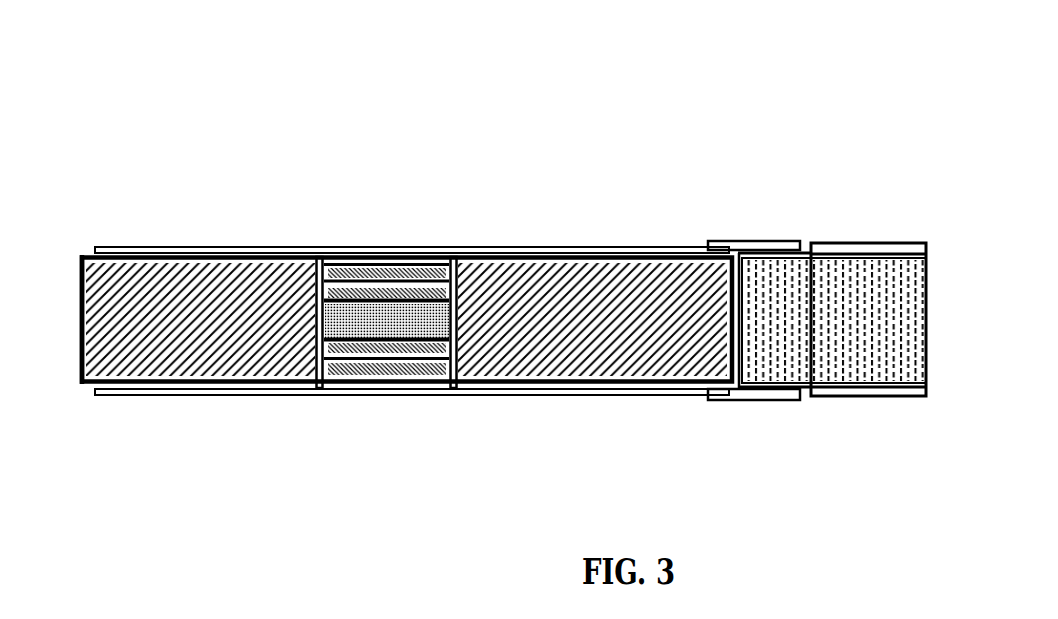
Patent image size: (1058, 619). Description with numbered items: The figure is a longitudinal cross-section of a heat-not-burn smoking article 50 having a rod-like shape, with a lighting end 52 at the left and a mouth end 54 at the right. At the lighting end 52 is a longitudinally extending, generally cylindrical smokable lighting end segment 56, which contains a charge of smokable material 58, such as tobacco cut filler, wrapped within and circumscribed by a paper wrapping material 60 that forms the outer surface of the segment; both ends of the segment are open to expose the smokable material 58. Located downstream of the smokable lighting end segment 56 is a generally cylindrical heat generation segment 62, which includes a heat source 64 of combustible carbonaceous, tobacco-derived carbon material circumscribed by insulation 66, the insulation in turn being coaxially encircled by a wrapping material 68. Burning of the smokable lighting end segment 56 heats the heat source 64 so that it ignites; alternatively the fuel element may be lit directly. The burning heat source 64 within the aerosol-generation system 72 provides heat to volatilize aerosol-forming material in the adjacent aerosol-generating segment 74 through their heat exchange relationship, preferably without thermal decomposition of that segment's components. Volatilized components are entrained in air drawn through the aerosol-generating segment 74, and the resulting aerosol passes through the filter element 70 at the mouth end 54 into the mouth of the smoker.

The heat-not-burn smoking article 50 is at (501, 309).
The lighting end 52 is at (81, 403).
The mouth end 54 is at (925, 205).
The smokable lighting end segment 56 is at (222, 403).
The smokable material 58 is at (267, 355).
The paper wrapping material 60 is at (273, 265).
The heat generation segment 62 is at (401, 324).
The heat source 64 is at (380, 320).
The insulation 66 is at (437, 262).
The wrapping material 68 is at (346, 374).
The filter element 70 is at (840, 415).
The aerosol-generation system 72 is at (452, 413).
The aerosol-generating segment 74 is at (580, 230).